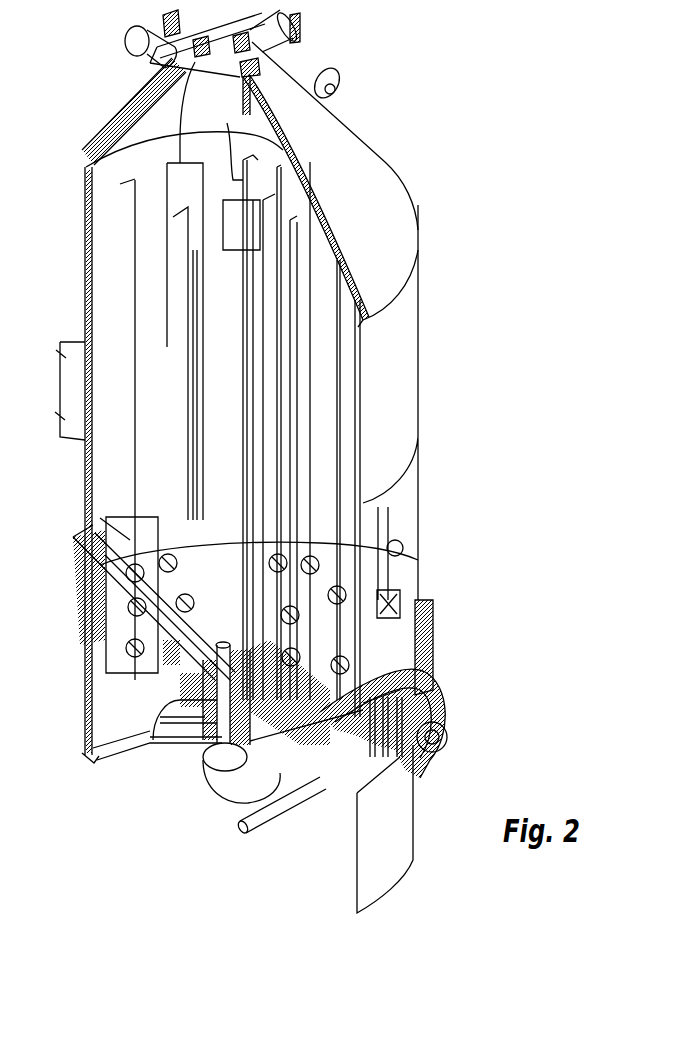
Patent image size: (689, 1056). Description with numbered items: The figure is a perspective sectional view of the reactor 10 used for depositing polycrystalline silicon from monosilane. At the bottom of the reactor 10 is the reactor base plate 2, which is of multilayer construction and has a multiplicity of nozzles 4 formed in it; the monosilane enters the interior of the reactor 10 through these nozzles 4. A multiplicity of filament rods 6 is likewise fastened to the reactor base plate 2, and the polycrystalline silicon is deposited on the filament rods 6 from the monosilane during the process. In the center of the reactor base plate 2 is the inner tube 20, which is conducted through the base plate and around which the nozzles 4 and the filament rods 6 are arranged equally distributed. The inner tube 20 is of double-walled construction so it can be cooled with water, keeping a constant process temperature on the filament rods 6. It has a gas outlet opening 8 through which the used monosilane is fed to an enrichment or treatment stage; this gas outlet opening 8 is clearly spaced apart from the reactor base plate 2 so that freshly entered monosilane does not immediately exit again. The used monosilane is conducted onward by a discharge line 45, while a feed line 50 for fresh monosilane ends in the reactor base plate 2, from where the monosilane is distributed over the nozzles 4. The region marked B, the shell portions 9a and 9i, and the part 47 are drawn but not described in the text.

The reactor base plate 2 is at (100, 518).
The nozzles 4 is at (188, 607).
The filament rods 6 is at (245, 125).
The gas outlet opening 8 is at (233, 240).
The outer shell 9a is at (400, 417).
The inner shell 9i is at (357, 418).
The reactor 10 is at (449, 314).
The inner tube 20 is at (258, 305).
The discharge line 45 is at (153, 740).
The pipe elbow 47 is at (307, 783).
The feed line 50 is at (421, 765).
The detail region B is at (110, 677).